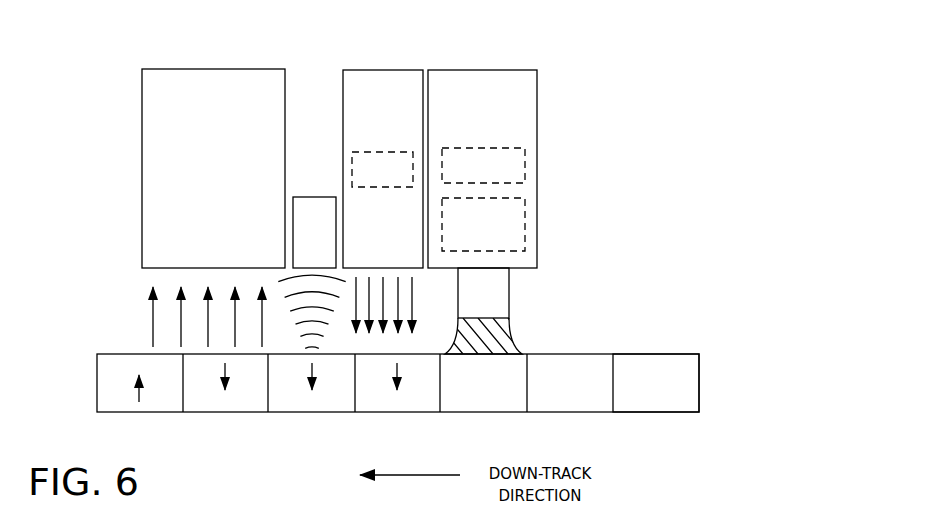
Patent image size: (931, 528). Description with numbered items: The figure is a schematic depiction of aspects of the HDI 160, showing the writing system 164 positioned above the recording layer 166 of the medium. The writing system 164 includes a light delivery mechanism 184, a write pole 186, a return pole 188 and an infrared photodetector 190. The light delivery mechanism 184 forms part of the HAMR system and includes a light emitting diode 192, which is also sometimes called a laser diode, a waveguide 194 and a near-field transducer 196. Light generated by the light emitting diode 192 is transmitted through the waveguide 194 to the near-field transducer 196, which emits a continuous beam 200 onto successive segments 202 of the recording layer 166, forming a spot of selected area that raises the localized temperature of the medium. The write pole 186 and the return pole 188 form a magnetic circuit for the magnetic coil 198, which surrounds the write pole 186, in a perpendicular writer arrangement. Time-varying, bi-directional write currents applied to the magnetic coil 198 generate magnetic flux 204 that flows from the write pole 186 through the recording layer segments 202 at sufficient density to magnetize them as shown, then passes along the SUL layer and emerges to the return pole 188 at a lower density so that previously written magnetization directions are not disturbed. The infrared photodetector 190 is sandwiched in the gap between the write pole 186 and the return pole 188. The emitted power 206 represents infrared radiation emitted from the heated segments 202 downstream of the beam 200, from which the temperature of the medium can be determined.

The HDI 160 is at (122, 53).
The writing system 164 is at (598, 110).
The recording layer 166 is at (682, 340).
The light delivery mechanism 184 is at (485, 70).
The write pole 186 is at (385, 70).
The return pole 188 is at (213, 69).
The infrared photodetector 190 is at (305, 197).
The light emitting diode 192 is at (525, 165).
The waveguide 194 is at (525, 222).
The near-field transducer 196 is at (510, 293).
The magnetic coil 198 is at (350, 167).
The continuous beam 200 is at (522, 333).
The segments 202 is at (653, 354).
The magnetic flux 204 is at (132, 318).
The emitted power 206 is at (280, 335).